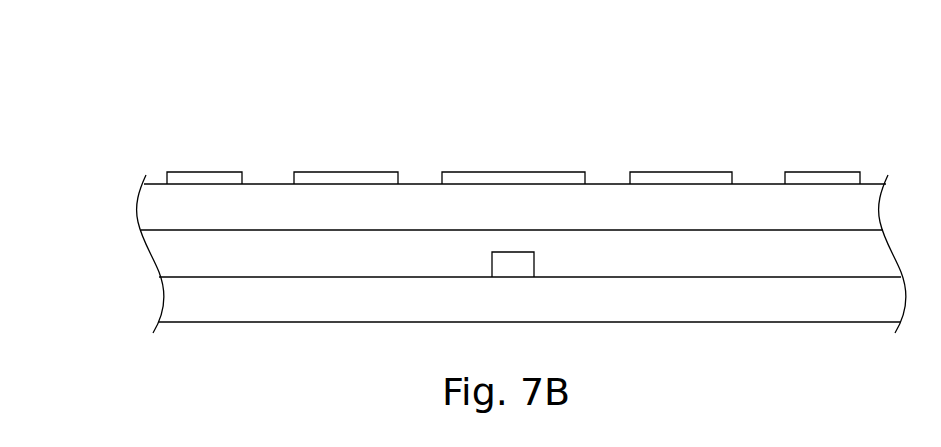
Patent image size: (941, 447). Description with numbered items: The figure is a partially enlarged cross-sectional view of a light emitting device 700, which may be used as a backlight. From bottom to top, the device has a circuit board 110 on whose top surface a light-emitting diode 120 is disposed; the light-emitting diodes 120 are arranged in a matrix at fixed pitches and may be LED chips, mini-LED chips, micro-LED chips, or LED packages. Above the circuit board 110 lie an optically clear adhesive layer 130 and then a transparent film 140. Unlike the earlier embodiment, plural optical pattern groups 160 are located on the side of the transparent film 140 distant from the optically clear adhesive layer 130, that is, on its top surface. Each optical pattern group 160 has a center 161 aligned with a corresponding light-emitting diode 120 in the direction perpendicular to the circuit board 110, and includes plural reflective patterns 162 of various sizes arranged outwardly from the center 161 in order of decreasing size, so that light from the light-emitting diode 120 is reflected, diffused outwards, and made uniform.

The light emitting device 700 is at (95, 81).
The circuit board 110 is at (166, 295).
The light-emitting diode 120 is at (518, 268).
The optically clear adhesive layer 130 is at (168, 251).
The transparent film 140 is at (168, 206).
The optical pattern group 160 is at (860, 110).
The center 161 is at (513, 171).
The reflective pattern 162 is at (837, 177).